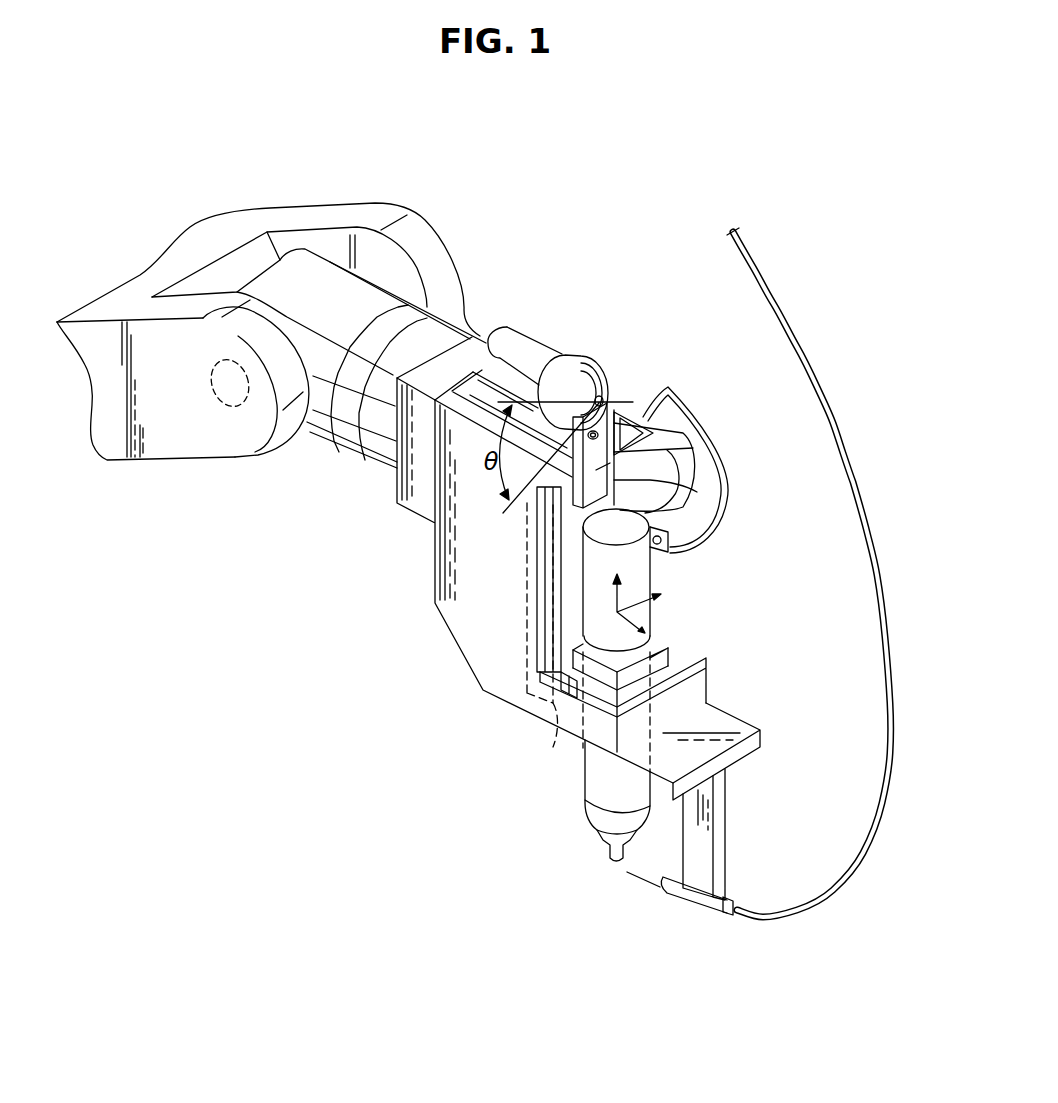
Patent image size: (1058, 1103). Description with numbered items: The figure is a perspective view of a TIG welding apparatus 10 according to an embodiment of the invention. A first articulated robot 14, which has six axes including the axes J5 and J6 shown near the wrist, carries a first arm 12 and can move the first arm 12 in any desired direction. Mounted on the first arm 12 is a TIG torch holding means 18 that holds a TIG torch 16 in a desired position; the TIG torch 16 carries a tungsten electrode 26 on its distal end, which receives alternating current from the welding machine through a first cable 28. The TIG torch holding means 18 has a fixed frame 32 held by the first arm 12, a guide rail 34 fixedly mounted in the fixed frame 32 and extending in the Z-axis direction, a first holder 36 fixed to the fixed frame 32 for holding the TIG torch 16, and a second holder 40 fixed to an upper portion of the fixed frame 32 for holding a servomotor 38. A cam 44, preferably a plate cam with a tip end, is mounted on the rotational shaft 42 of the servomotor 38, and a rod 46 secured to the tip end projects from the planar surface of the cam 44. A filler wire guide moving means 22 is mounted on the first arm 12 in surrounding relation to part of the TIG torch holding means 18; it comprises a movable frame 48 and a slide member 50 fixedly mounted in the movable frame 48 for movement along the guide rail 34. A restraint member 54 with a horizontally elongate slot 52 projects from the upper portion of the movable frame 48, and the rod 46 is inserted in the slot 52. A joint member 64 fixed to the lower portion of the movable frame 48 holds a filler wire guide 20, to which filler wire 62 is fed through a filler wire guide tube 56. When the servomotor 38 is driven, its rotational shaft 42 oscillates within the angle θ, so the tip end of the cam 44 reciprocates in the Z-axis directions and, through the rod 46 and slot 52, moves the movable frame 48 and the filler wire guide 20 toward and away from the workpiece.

The TIG welding apparatus 10 is at (481, 150).
The first arm 12 is at (440, 316).
The first articulated robot 14 is at (212, 436).
The TIG torch 16 is at (645, 616).
The TIG torch holding means 18 is at (577, 340).
The filler wire guide 20 is at (685, 897).
The filler wire guide moving means 22 is at (464, 661).
The tungsten electrode 26 is at (608, 846).
The first cable 28 is at (697, 547).
The fixed frame 32 is at (687, 530).
The guide rail 34 is at (593, 715).
The first holder 36 is at (667, 652).
The servomotor 38 is at (580, 363).
The second holder 40 is at (484, 374).
The rotational shaft 42 is at (657, 408).
The cam 44 is at (617, 385).
The rod 46 is at (683, 433).
The movable frame 48 is at (473, 628).
The slide member 50 is at (540, 693).
The slot 52 is at (660, 449).
The restraint member 54 is at (700, 497).
The filler wire guide tube 56 is at (882, 647).
The filler wire 62 is at (642, 878).
The joint member 64 is at (708, 838).
The axis J5 is at (238, 402).
The axis J6 is at (390, 445).